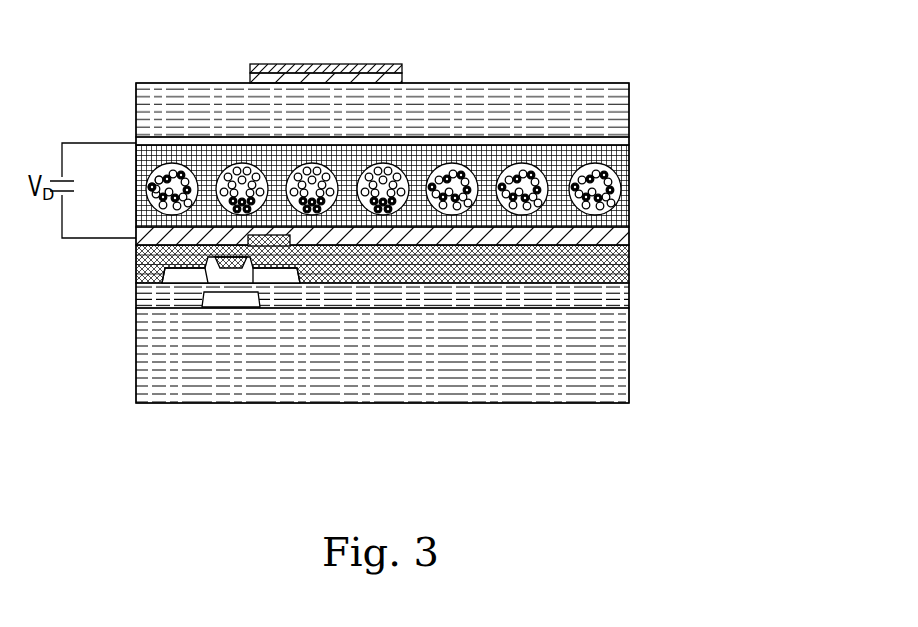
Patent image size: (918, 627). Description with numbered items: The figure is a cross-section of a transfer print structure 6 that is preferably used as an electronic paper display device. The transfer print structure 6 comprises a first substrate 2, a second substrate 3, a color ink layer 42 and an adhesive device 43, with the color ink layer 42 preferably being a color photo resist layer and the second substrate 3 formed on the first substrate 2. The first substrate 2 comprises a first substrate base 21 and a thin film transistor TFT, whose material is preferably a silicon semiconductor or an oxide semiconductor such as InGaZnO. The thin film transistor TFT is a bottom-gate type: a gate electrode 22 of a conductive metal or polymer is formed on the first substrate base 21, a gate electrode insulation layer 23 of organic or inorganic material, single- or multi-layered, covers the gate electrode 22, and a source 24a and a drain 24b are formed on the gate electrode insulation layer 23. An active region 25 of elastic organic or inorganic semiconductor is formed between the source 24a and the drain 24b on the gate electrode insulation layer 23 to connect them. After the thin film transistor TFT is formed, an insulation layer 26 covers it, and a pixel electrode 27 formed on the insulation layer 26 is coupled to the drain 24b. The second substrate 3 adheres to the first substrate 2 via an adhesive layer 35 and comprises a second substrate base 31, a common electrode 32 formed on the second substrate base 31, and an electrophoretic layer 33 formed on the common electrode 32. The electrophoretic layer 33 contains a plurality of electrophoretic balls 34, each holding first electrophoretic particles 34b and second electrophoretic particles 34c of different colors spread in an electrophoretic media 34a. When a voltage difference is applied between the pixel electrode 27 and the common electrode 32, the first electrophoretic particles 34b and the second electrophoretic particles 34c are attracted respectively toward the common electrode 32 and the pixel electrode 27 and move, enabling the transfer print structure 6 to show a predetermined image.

The first substrate 2 is at (615, 418).
The second substrate 3 is at (693, 85).
The transfer print structure 6 is at (468, 476).
The first substrate base 21 is at (630, 336).
The gate electrode 22 is at (237, 298).
The gate electrode insulation layer 23 is at (630, 293).
The source 24a is at (178, 277).
The drain 24b is at (273, 277).
The active region 25 is at (214, 282).
The insulation layer 26 is at (630, 263).
The pixel electrode 27 is at (356, 247).
The second substrate base 31 is at (630, 103).
The common electrode 32 is at (630, 139).
The electrophoretic layer 33 is at (630, 204).
The electrophoretic balls 34 is at (630, 169).
The electrophoretic media 34a is at (137, 175).
The first electrophoretic particles 34b is at (150, 185).
The second electrophoretic particles 34c is at (150, 200).
The adhesive layer 35 is at (630, 238).
The color ink layer 42 is at (402, 68).
The adhesive device 43 is at (402, 82).
The thin film transistor TFT is at (169, 307).